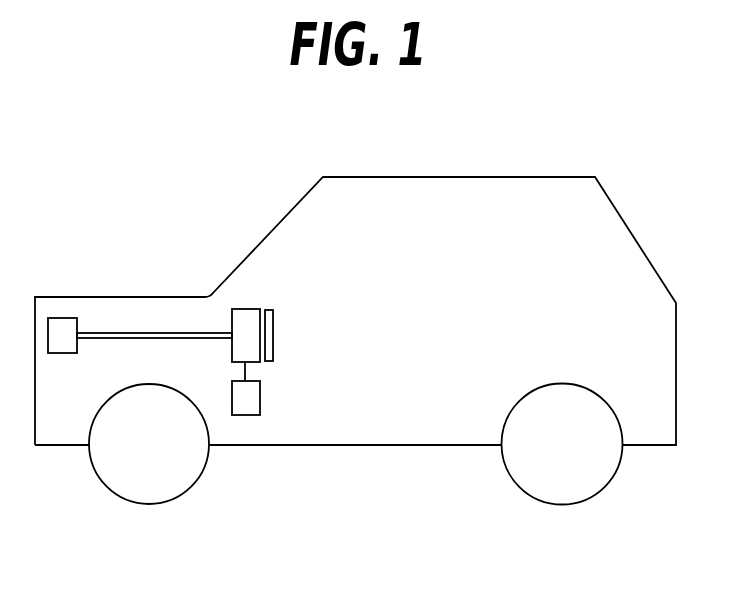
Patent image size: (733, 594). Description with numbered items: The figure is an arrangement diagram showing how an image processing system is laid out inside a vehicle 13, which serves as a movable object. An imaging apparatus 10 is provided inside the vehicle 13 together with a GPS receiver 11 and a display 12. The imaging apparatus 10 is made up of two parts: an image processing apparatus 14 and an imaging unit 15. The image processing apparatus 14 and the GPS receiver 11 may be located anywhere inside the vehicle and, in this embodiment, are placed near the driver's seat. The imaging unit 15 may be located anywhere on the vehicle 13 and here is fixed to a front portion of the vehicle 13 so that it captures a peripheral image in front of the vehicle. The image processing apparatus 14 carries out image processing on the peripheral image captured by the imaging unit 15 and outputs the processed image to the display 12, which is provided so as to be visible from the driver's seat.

The imaging apparatus 10 is at (47, 233).
The GPS receiver 11 is at (260, 395).
The display 12 is at (273, 337).
The vehicle 13 is at (367, 445).
The image processing apparatus 14 is at (245, 309).
The imaging unit 15 is at (61, 318).